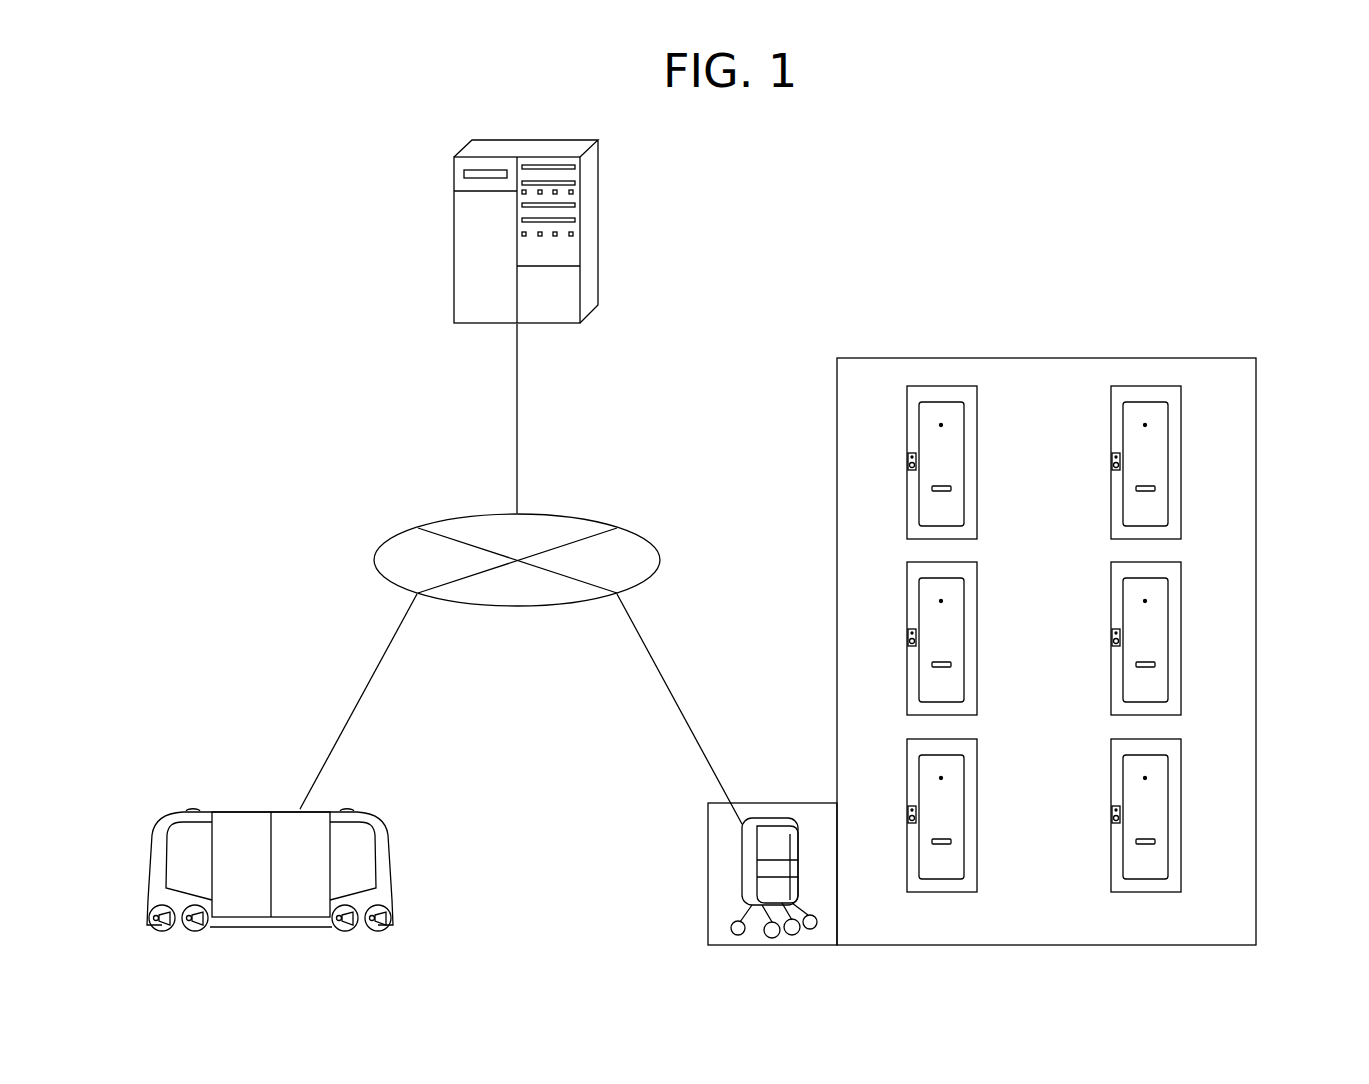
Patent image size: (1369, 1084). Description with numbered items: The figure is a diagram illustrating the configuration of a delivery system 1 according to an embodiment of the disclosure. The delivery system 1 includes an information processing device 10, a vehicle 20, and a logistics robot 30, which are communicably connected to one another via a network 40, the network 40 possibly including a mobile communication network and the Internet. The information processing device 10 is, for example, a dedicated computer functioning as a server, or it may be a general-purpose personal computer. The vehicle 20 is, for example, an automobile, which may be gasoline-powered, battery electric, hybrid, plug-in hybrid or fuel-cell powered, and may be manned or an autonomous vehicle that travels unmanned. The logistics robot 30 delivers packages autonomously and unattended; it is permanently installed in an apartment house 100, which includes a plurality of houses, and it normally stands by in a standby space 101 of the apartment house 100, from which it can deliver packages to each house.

The delivery system 1 is at (770, 198).
The information processing device 10 is at (455, 228).
The vehicle 20 is at (247, 812).
The logistics robot 30 is at (740, 857).
The network 40 is at (590, 518).
The apartment house 100 is at (1045, 358).
The standby space 101 is at (755, 802).